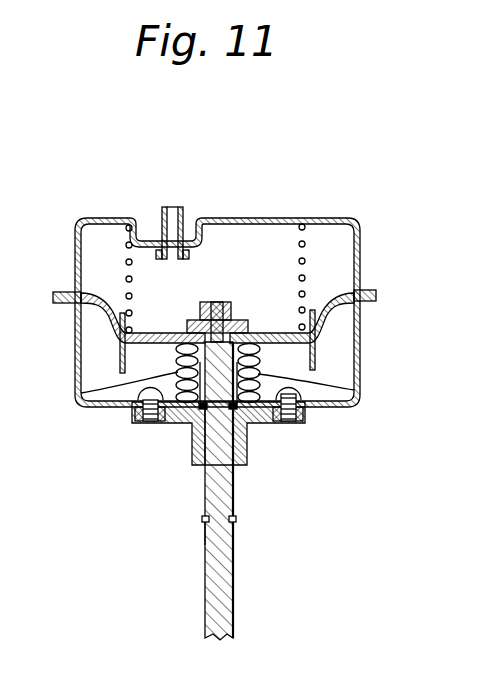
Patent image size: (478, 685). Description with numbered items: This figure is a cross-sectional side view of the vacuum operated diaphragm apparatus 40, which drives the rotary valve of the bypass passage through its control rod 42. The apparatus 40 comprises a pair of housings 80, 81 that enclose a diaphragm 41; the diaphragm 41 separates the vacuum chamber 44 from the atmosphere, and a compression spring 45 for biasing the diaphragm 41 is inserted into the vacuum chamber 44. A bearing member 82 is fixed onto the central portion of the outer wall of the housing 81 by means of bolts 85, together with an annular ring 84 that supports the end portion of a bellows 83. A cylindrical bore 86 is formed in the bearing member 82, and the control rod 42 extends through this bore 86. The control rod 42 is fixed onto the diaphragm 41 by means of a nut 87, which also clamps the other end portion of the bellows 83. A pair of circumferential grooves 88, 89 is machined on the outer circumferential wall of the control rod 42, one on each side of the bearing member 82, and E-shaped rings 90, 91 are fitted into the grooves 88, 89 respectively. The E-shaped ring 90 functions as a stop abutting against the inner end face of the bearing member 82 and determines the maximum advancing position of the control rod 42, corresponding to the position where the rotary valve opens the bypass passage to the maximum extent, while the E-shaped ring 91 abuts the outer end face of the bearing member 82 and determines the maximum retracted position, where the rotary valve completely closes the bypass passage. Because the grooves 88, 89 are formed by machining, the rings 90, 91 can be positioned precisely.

The vacuum operated diaphragm apparatus 40 is at (76, 212).
The diaphragm 41 is at (76, 337).
The control rod 42 is at (234, 582).
The vacuum chamber 44 is at (261, 232).
The compression spring 45 is at (307, 260).
The housing 80 is at (362, 236).
The housing 81 is at (362, 347).
The bearing member 82 is at (247, 452).
The bellows 83 is at (78, 392).
The annular ring 84 is at (357, 387).
The bolts 85 is at (147, 425).
The cylindrical bore 86 is at (205, 519).
The nut 87 is at (236, 320).
The circumferential groove 88 is at (205, 487).
The circumferential groove 89 is at (210, 560).
The E-shaped ring 90 is at (192, 422).
The E-shaped ring 91 is at (205, 535).